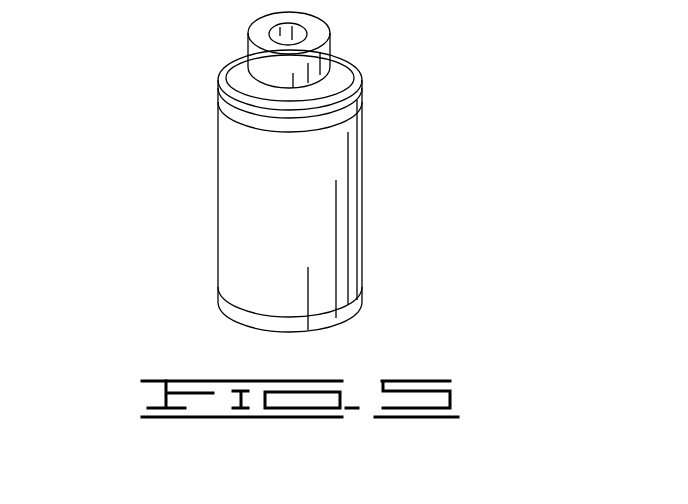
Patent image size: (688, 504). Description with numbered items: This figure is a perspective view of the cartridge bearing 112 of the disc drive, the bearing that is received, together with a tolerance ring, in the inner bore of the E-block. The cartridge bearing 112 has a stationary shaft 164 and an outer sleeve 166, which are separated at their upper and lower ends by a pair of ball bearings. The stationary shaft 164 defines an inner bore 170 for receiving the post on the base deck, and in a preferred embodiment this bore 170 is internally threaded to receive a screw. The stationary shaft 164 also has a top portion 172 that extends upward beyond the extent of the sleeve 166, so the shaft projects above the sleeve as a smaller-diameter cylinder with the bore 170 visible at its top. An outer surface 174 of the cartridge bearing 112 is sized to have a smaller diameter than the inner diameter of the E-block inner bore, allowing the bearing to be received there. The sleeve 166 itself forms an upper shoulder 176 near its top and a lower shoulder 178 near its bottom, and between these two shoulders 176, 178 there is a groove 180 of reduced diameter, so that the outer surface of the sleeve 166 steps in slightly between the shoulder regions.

The cartridge bearing 112 is at (310, 166).
The stationary shaft 164 is at (282, 44).
The outer sleeve 166 is at (318, 193).
The inner bore 170 is at (304, 32).
The top portion 172 is at (307, 70).
The outer surface 174 is at (242, 173).
The upper shoulder 176 is at (242, 100).
The lower shoulder 178 is at (250, 313).
The groove 180 is at (218, 118).